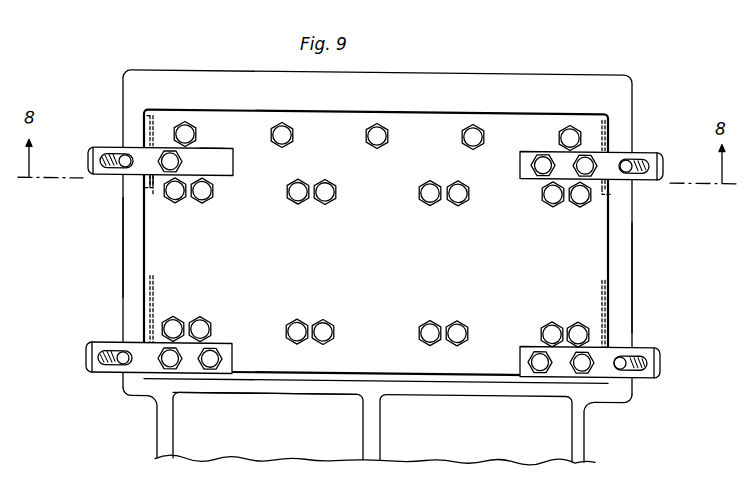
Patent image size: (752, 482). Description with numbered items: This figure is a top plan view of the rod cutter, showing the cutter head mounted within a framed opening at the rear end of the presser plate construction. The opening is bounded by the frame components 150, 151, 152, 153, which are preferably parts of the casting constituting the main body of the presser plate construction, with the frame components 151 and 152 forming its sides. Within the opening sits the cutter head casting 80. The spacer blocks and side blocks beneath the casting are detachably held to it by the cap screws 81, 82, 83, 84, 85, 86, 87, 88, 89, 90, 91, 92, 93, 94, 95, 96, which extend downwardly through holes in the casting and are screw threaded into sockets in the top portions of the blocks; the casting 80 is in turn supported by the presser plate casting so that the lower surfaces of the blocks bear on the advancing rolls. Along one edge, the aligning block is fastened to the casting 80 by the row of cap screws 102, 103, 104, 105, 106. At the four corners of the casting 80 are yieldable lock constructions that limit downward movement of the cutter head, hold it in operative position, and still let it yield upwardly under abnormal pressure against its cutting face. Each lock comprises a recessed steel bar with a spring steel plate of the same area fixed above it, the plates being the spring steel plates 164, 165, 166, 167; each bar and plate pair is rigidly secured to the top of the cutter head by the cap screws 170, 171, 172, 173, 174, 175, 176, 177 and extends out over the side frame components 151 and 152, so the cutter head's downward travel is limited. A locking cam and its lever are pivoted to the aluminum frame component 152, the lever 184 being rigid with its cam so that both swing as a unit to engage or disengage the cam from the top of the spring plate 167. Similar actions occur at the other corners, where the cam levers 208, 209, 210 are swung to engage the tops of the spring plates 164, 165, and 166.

The cutter head casting 80 is at (580, 252).
The cap screw 81 is at (175, 323).
The cap screw 82 is at (204, 324).
The cap screw 83 is at (292, 323).
The cap screw 84 is at (322, 326).
The cap screw 85 is at (423, 326).
The cap screw 86 is at (460, 324).
The cap screw 87 is at (545, 324).
The cap screw 88 is at (578, 324).
The cap screw 89 is at (173, 200).
The cap screw 90 is at (205, 199).
The cap screw 91 is at (292, 201).
The cap screw 92 is at (325, 200).
The cap screw 93 is at (425, 200).
The cap screw 94 is at (460, 199).
The cap screw 95 is at (548, 198).
The cap screw 96 is at (577, 199).
The cap screw 102 is at (184, 127).
The cap screw 103 is at (276, 127).
The cap screw 104 is at (379, 130).
The cap screw 105 is at (478, 127).
The cap screw 106 is at (571, 128).
The frame component 150 is at (207, 71).
The side frame component 151 is at (618, 292).
The side frame component 152 is at (133, 241).
The frame component 153 is at (298, 388).
The spring steel plate 164 is at (520, 363).
The spring steel plate 165 is at (532, 153).
The spring steel plate 166 is at (195, 155).
The spring steel plate 167 is at (233, 364).
The cap screw 170 is at (532, 164).
The cap screw 171 is at (588, 161).
The cap screw 172 is at (580, 370).
The cap screw 173 is at (538, 368).
The cap screw 174 is at (207, 367).
The cap screw 175 is at (167, 362).
The cap screw 176 is at (215, 164).
The cap screw 177 is at (166, 163).
The lever 184 is at (110, 368).
The cam lever 208 is at (117, 160).
The cam lever 209 is at (628, 168).
The cam lever 210 is at (642, 346).